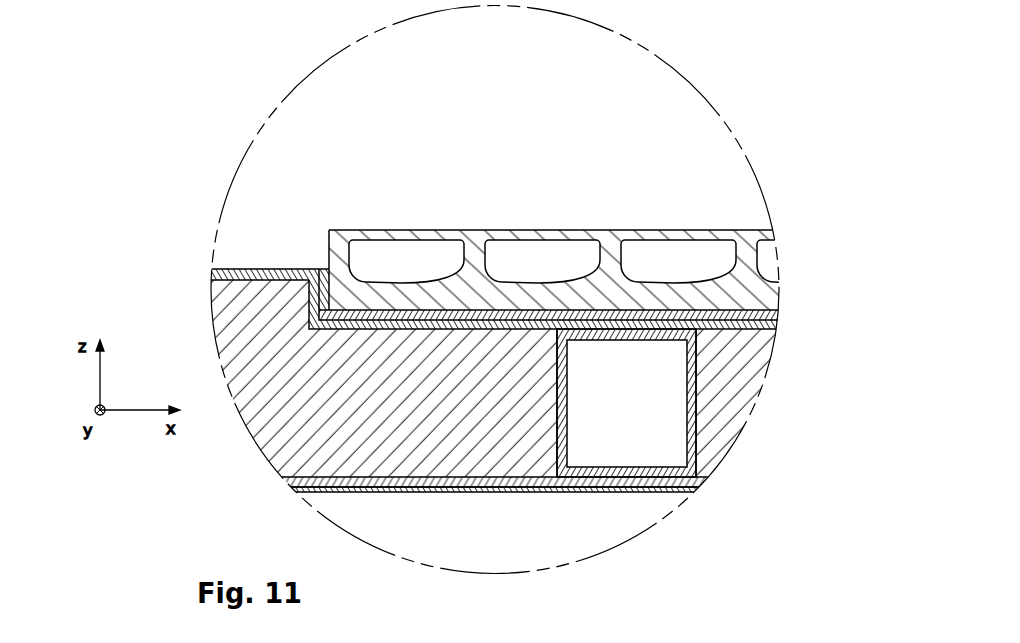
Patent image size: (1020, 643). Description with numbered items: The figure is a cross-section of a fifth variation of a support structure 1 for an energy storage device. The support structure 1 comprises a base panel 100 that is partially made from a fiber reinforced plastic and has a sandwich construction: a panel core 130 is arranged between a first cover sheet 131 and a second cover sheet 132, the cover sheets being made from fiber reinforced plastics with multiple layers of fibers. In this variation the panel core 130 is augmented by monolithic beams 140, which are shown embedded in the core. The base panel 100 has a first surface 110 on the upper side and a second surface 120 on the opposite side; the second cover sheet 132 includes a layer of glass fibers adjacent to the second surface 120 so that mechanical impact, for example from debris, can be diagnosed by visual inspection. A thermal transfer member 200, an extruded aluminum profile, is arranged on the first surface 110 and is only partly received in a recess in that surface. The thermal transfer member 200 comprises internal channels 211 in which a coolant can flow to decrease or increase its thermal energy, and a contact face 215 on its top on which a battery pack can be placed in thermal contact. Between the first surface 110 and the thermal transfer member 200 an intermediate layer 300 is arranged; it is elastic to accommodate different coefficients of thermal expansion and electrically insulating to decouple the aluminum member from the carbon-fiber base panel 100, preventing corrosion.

The support structure 1 is at (270, 180).
The base panel 100 is at (567, 500).
The first surface 110 is at (387, 320).
The second surface 120 is at (300, 492).
The panel core 130 is at (738, 368).
The first cover sheet 131 is at (245, 275).
The second cover sheet 132 is at (622, 485).
The monolithic beams 140 is at (700, 420).
The thermal transfer member 200 is at (648, 208).
The internal channels 211 is at (697, 252).
The contact face 215 is at (703, 232).
The intermediate layer 300 is at (777, 312).